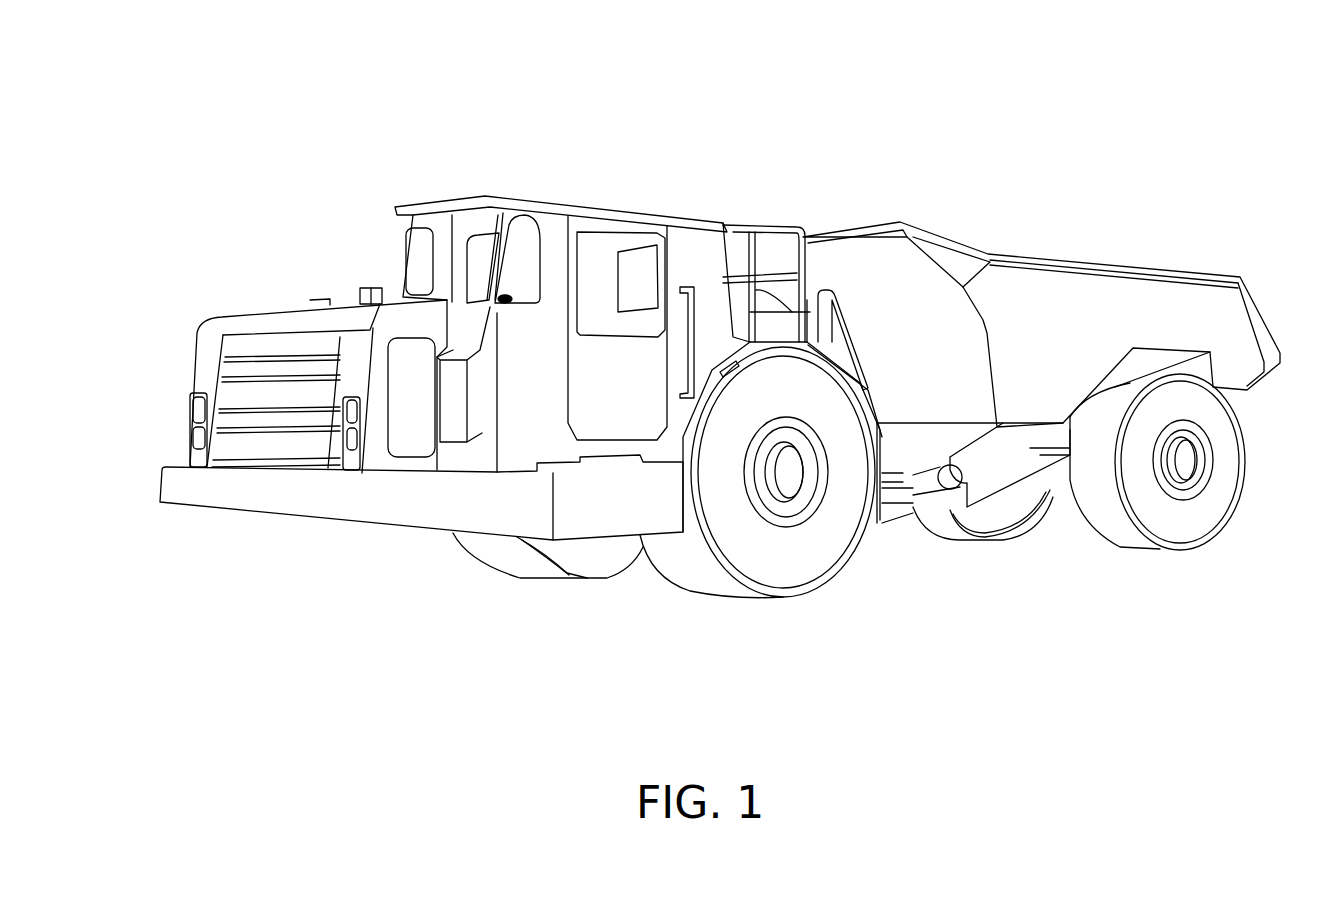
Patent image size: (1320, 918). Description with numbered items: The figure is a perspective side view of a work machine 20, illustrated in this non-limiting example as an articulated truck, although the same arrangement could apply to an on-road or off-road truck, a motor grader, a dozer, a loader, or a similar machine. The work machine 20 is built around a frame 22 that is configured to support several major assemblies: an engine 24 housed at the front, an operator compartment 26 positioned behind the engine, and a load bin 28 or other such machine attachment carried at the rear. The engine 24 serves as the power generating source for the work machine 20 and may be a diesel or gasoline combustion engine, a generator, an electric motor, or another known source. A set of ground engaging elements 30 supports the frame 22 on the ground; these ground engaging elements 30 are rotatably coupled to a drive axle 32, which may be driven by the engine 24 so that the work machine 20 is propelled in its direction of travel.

The work machine 20 is at (262, 94).
The frame 22 is at (990, 481).
The engine 24 is at (226, 323).
The operator compartment 26 is at (476, 229).
The load bin 28 is at (1078, 290).
The ground engaging elements 30 is at (787, 573).
The drive axle 32 is at (1063, 474).